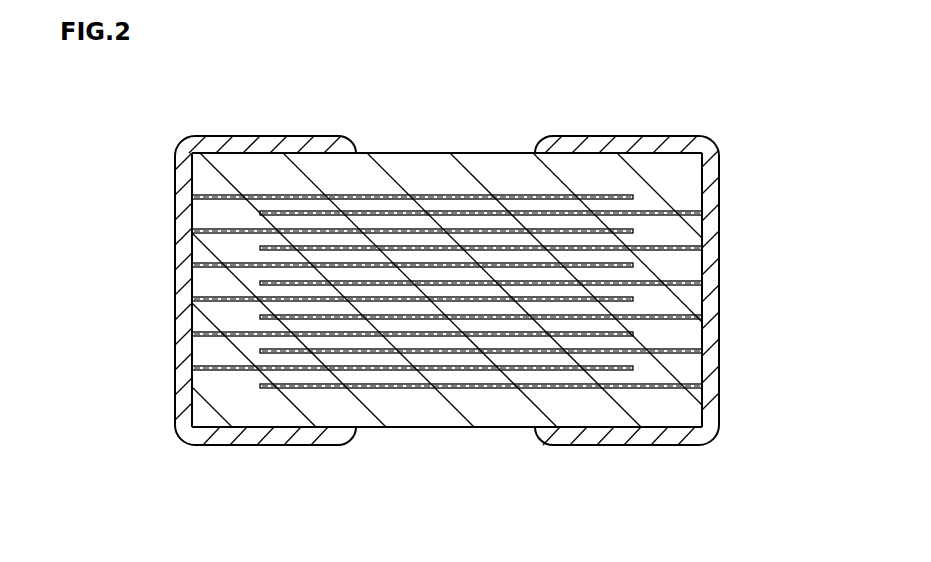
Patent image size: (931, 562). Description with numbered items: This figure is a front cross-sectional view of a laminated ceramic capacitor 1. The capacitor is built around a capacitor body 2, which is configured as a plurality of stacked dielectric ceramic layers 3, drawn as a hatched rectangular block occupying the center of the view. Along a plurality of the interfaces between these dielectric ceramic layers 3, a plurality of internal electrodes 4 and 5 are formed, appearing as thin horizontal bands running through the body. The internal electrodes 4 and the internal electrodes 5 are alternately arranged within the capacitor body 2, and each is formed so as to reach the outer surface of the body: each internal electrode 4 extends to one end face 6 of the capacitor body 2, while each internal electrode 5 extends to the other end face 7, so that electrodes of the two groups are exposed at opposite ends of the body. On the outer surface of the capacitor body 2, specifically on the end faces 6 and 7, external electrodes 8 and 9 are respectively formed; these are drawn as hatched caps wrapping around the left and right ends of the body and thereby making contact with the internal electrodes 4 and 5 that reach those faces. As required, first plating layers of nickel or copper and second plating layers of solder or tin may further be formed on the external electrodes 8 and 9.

The laminated ceramic capacitor 1 is at (757, 76).
The capacitor body 2 is at (445, 152).
The dielectric ceramic layers 3 is at (472, 205).
The internal electrode 4 is at (615, 368).
The internal electrode 5 is at (273, 213).
The end face 6 is at (190, 342).
The end face 7 is at (704, 340).
The external electrode 8 is at (186, 231).
The external electrode 9 is at (712, 228).